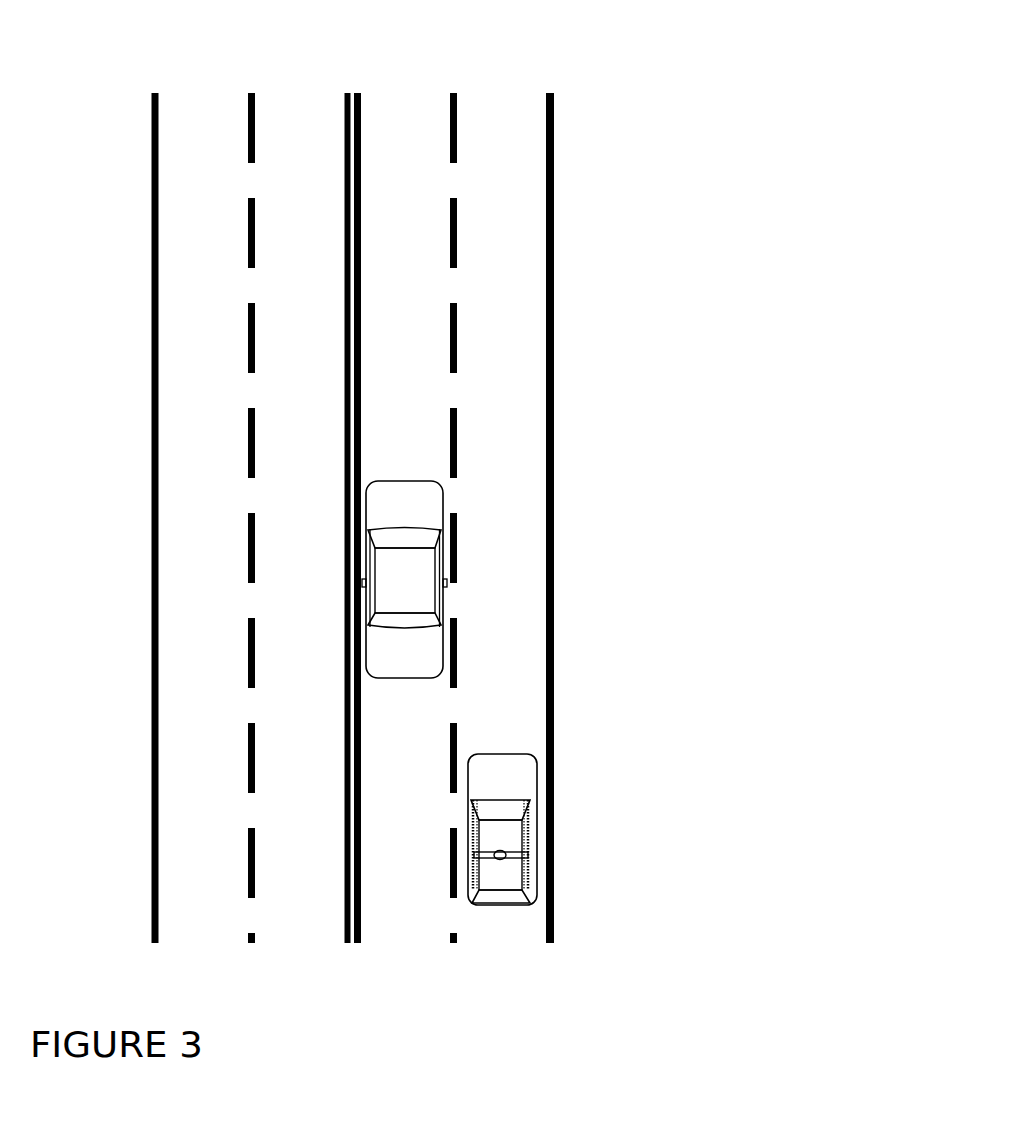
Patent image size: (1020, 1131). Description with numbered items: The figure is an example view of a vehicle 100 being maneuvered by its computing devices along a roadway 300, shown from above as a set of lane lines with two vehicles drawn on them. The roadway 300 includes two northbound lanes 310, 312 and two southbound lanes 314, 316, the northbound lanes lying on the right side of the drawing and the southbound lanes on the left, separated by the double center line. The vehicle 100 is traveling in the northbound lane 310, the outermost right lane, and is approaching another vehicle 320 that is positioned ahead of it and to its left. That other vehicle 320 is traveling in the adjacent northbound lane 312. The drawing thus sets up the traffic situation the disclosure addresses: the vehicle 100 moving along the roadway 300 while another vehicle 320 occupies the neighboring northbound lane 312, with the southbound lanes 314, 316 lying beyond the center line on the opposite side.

The roadway 300 is at (739, 1018).
The northbound lane 310 is at (502, 96).
The northbound lane 312 is at (395, 96).
The southbound lane 314 is at (298, 96).
The southbound lane 316 is at (192, 96).
The vehicle 320 is at (445, 597).
The vehicle 100 is at (535, 840).